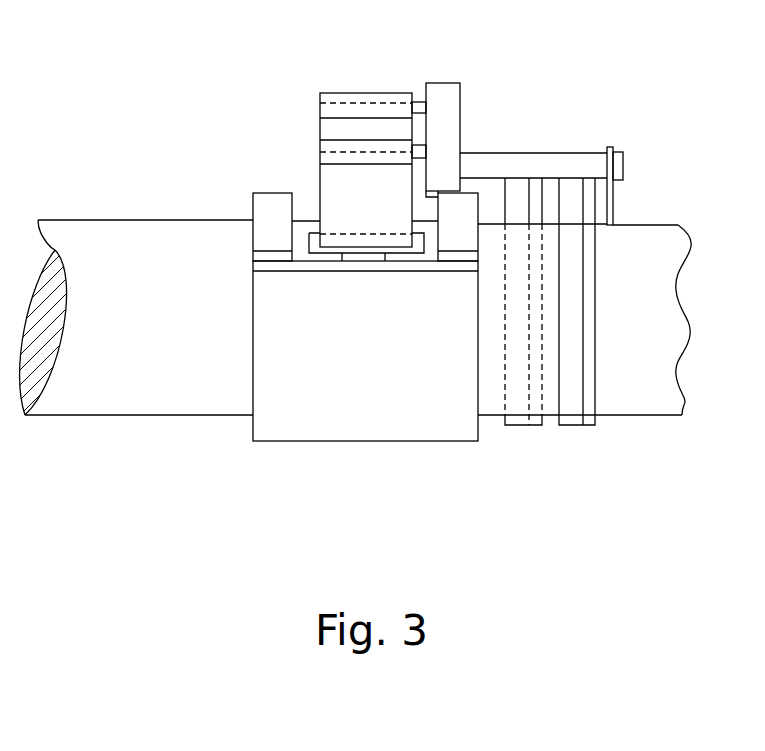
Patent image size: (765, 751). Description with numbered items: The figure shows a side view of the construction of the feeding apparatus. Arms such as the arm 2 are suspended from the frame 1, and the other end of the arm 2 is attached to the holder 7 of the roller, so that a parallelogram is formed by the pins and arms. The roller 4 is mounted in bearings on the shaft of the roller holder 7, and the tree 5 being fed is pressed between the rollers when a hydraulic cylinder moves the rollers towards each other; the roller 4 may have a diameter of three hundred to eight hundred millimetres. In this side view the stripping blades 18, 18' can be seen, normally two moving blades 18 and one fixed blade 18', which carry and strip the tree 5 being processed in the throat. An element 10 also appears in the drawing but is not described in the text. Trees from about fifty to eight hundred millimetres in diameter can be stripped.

The frame 1 is at (447, 112).
The arm 2 is at (367, 105).
The roller 4 is at (308, 427).
The tree 5 is at (175, 397).
The holder 7 is at (388, 265).
The support block 10 is at (270, 212).
The stripping blade 18 is at (594, 352).
The stripping blade 18' is at (595, 177).